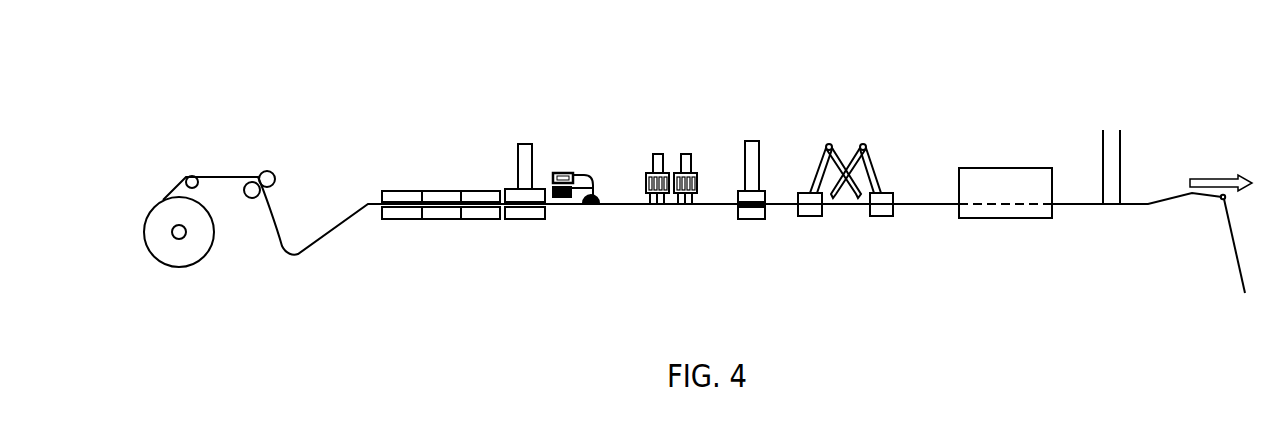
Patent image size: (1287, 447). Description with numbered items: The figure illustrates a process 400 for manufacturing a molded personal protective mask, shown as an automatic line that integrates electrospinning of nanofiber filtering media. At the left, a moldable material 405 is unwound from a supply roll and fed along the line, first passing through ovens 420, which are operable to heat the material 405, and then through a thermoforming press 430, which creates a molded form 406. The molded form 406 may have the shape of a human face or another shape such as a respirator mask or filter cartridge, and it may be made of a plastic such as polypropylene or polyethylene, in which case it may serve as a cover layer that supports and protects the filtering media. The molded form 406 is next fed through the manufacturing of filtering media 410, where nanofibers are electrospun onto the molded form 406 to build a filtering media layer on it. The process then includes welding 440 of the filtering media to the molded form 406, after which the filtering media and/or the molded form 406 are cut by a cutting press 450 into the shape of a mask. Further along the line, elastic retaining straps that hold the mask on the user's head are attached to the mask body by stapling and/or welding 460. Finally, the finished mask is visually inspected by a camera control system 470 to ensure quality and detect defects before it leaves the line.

The process 400 is at (293, 80).
The moldable material 405 is at (278, 253).
The molded form 406 is at (571, 208).
The manufacturing of filtering media 410 is at (586, 163).
The ovens 420 is at (433, 180).
The thermoforming press 430 is at (523, 140).
The welding 440 is at (682, 148).
The cutting press 450 is at (753, 132).
The stapling and/or welding 460 is at (843, 228).
The camera control system 470 is at (1107, 127).